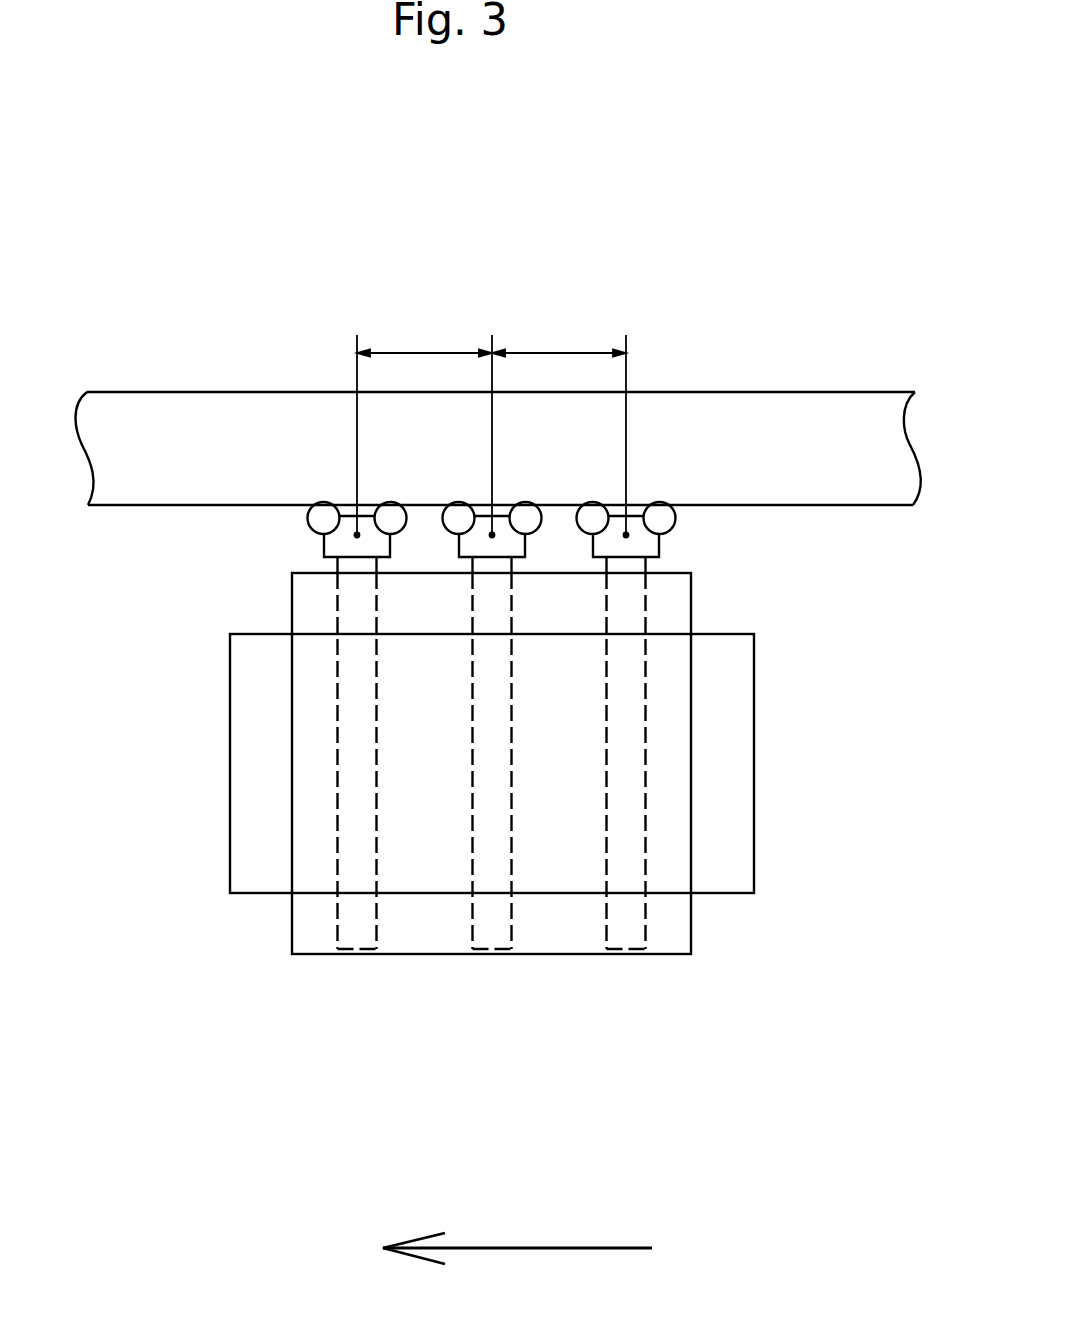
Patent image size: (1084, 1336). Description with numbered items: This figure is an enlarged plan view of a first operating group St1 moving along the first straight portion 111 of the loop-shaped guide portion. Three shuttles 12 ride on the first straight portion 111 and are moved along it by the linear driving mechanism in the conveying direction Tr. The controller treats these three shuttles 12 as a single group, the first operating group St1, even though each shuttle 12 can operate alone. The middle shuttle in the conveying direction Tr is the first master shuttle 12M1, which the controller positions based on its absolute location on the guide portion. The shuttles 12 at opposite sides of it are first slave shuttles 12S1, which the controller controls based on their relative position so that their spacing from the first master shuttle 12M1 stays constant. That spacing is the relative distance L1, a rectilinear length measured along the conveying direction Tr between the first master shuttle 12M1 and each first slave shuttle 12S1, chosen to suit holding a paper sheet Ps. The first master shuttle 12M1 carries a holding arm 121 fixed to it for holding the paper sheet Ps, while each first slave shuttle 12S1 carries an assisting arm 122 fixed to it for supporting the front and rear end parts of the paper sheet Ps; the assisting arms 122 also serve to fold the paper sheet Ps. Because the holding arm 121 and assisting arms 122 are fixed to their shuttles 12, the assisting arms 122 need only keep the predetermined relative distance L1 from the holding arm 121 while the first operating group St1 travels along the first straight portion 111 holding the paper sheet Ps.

The first straight portion 111 is at (787, 392).
The shuttle 12 is at (454, 496).
The first slave shuttle 12S1 is at (345, 525).
The first master shuttle 12M1 is at (453, 496).
The first operating group St1 is at (534, 497).
The paper sheet Ps is at (720, 828).
The holding arm 121 is at (490, 912).
The assisting arm 122 is at (346, 912).
The relative distance L1 is at (492, 428).
The travel direction Tr is at (517, 1234).